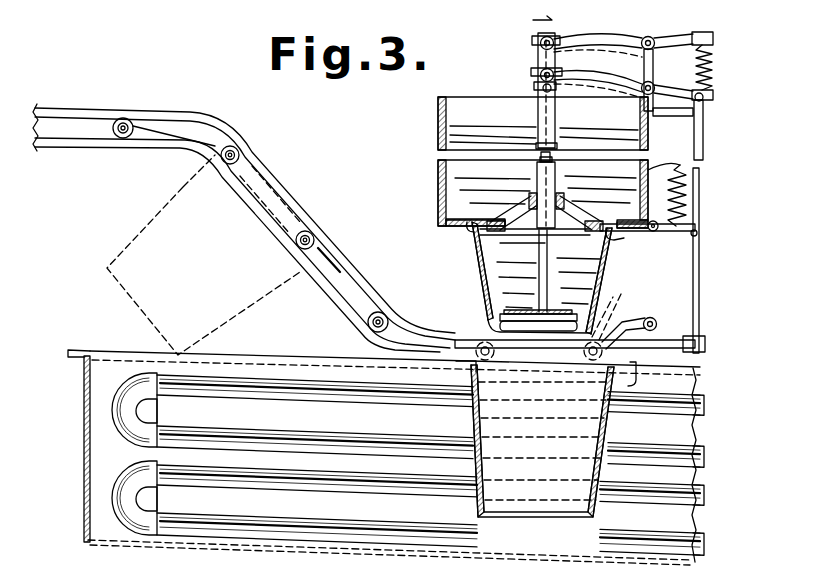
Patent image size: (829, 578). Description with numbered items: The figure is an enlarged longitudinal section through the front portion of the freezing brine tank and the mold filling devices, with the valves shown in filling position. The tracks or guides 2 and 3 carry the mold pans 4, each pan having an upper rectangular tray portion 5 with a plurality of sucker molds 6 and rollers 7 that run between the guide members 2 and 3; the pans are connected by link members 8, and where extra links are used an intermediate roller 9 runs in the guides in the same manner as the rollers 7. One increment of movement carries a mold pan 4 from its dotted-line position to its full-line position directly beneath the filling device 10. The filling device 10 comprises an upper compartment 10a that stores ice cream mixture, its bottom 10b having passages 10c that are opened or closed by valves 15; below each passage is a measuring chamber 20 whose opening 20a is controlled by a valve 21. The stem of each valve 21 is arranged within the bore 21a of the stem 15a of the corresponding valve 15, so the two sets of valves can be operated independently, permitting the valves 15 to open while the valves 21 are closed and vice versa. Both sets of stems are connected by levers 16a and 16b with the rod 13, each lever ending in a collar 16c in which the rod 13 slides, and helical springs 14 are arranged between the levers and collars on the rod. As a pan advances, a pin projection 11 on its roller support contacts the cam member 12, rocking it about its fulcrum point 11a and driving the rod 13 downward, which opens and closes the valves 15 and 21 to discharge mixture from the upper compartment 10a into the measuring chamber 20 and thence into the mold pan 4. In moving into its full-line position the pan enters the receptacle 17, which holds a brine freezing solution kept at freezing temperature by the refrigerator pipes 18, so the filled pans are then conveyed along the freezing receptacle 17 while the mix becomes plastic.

The track 2 is at (55, 112).
The guide 3 is at (62, 148).
The mold pan 4 is at (180, 196).
The rectangular tray portion 5 is at (402, 412).
The sucker mold 6 is at (606, 432).
The roller 7 is at (243, 157).
The link member 8 is at (165, 133).
The intermediate roller 9 is at (125, 118).
The filling device 10 is at (438, 192).
The upper compartment 10a is at (438, 126).
The bottom 10b is at (463, 233).
The passage 10c is at (482, 243).
The pin projection 11 is at (308, 236).
The fulcrum point 11a is at (664, 322).
The cam member 12 is at (637, 318).
The rod 13 is at (700, 290).
The helical spring 14 is at (694, 70).
The valve 15 is at (612, 247).
The valve stem 15a is at (558, 124).
The lever 16a is at (602, 40).
The lever 16b is at (619, 78).
The collar 16c is at (713, 45).
The freezing receptacle 17 is at (84, 463).
The refrigerator pipe 18 is at (322, 392).
The measuring chamber 20 is at (494, 271).
The opening 20a is at (506, 318).
The valve 21 is at (541, 336).
The bore 21a is at (536, 122).